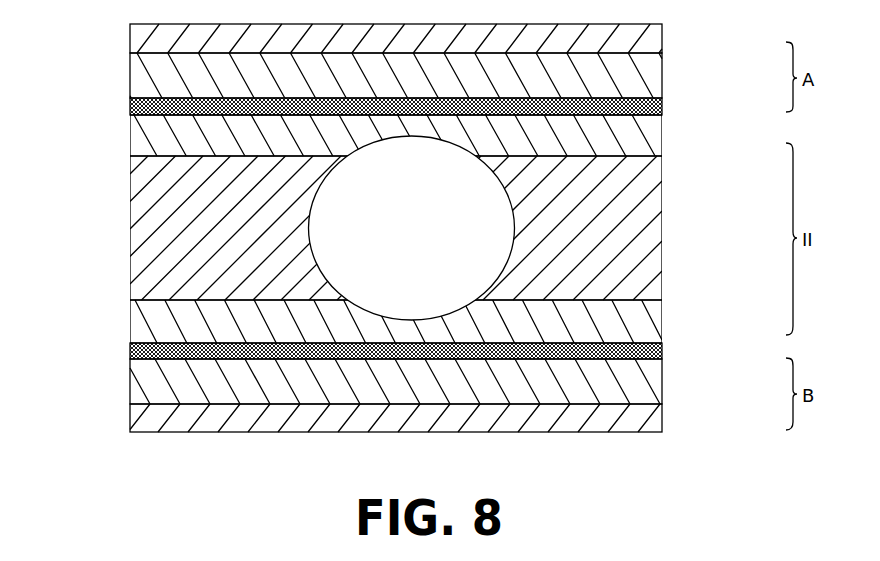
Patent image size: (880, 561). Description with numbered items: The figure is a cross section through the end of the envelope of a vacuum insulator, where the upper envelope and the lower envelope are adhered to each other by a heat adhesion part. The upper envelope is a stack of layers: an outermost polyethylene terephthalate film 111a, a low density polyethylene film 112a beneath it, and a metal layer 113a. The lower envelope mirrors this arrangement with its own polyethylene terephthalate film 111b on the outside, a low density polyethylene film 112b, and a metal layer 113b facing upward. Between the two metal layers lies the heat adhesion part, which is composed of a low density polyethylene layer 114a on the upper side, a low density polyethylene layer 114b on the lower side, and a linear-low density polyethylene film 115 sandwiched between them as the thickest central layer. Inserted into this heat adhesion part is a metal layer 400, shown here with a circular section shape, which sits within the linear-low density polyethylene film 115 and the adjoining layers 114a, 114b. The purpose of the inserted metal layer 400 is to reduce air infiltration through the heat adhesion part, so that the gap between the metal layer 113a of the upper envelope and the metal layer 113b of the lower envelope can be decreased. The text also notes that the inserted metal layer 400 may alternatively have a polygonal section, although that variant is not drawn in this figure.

The polyethylene terephthalate film 111a is at (662, 34).
The low density polyethylene film 112a is at (662, 72).
The metal layer 113a is at (662, 107).
The low density polyethylene 114a is at (662, 135).
The linear-low density polyethylene film 115 is at (662, 222).
The low density polyethylene 114b is at (662, 327).
The metal layer 113b is at (662, 352).
The low density polyethylene film 112b is at (662, 385).
The polyethylene terephthalate film 111b is at (662, 420).
The metal layer 400 is at (328, 225).